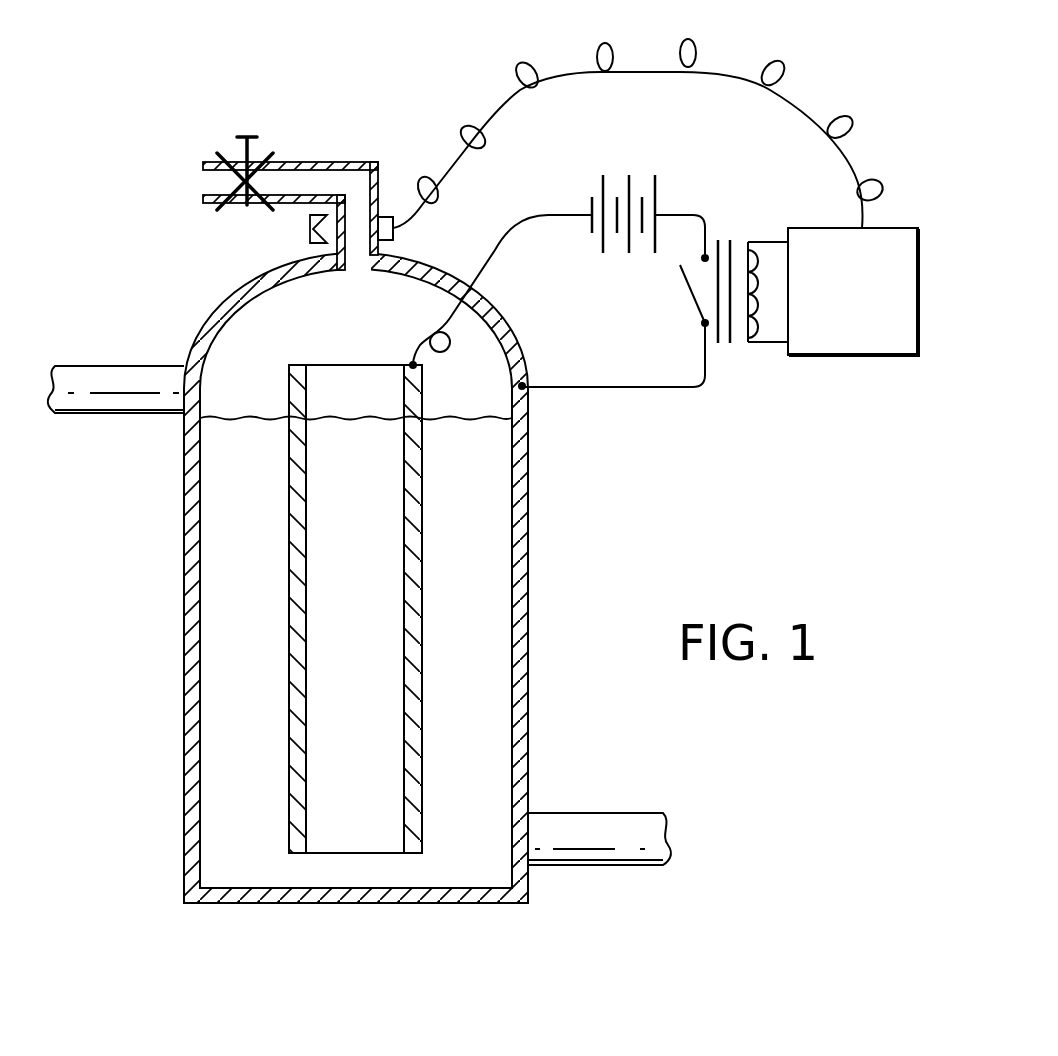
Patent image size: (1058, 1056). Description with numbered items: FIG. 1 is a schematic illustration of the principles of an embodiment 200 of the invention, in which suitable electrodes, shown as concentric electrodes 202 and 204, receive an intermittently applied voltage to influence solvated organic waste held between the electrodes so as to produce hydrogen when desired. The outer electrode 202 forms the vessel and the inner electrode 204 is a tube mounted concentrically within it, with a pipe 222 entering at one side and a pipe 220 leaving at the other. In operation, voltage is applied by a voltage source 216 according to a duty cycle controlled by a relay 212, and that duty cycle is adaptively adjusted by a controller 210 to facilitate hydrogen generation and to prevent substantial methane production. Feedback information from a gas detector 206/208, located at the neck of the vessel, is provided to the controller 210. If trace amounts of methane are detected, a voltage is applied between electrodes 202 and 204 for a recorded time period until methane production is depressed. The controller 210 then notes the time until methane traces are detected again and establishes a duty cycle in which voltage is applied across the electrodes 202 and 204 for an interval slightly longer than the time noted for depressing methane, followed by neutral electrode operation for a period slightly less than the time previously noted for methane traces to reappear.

The embodiment 200 is at (190, 308).
The concentric electrode 202 is at (528, 563).
The concentric electrode 204 is at (423, 467).
The gas detector 206 is at (312, 228).
The gas detector 208 is at (388, 218).
The controller 210 is at (863, 338).
The relay 212 is at (692, 302).
The voltage source 216 is at (626, 176).
The outlet pipe 220 is at (627, 822).
The inlet pipe 222 is at (87, 400).